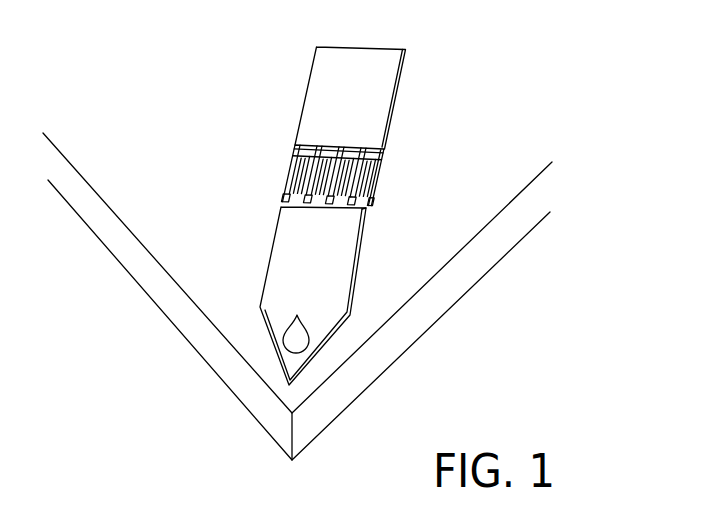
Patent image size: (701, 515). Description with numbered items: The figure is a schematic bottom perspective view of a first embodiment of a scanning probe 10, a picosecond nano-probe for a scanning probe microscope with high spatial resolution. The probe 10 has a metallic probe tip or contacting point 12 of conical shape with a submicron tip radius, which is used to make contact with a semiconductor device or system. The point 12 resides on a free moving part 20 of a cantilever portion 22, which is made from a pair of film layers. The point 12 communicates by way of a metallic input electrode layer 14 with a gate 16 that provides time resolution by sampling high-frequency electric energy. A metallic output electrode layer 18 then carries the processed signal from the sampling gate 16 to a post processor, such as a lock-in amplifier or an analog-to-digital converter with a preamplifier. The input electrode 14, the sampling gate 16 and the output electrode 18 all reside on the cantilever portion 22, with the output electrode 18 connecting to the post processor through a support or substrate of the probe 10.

The scanning probe 10 is at (576, 52).
The probe tip or contacting point 12 is at (301, 327).
The input electrode layer 14 is at (362, 250).
The gate 16 is at (397, 193).
The output electrode layer 18 is at (404, 96).
The free moving part 20 is at (188, 321).
The cantilever portion 22 is at (217, 252).